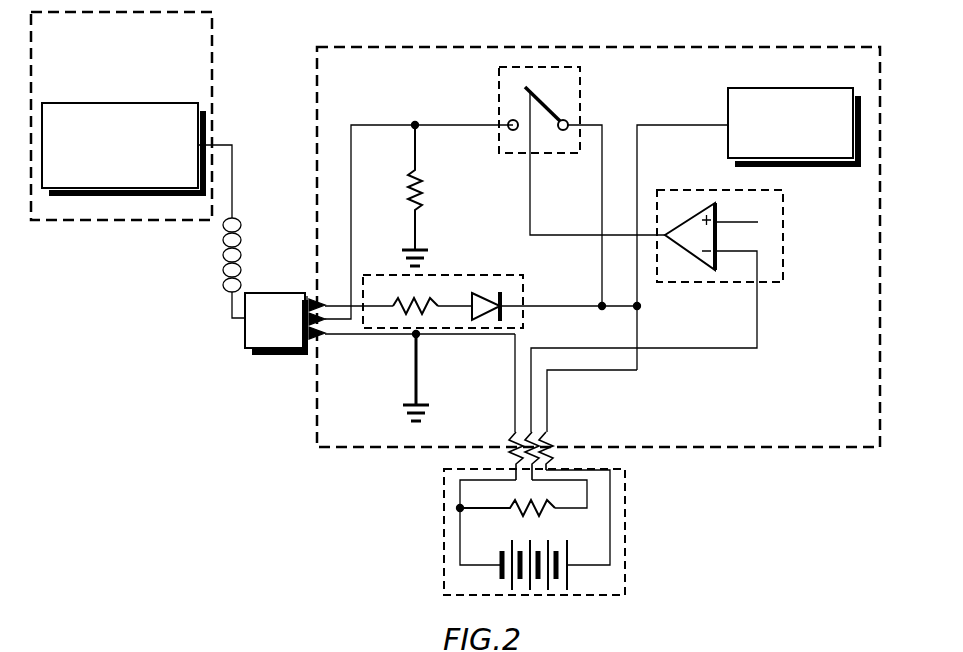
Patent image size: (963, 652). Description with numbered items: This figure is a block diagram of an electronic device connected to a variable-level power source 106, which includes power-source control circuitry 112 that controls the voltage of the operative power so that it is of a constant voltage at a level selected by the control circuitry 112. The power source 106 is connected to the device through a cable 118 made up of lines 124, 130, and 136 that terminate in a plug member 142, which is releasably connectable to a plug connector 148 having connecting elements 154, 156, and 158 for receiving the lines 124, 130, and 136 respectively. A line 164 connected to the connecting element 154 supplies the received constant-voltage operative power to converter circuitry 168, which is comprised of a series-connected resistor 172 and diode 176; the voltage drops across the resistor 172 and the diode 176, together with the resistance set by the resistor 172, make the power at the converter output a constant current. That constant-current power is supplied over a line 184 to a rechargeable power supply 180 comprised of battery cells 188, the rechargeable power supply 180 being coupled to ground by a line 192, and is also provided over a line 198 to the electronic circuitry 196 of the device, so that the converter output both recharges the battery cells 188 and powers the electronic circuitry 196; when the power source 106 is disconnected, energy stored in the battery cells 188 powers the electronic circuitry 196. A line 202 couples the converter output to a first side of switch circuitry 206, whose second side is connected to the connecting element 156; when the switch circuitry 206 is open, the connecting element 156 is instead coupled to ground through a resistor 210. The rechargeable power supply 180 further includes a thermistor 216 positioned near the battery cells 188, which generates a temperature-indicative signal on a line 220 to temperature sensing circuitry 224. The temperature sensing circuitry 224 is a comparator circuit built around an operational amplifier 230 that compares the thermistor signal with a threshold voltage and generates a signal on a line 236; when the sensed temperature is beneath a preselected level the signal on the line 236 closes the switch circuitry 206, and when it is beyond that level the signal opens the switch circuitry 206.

The variable-level power source 106 is at (214, 51).
The power-source control circuitry 112 is at (158, 103).
The cable 118 is at (243, 262).
The line 124 is at (304, 296).
The line 130 is at (292, 350).
The line 136 is at (308, 345).
The plug member 142 is at (247, 333).
The plug connector 148 is at (310, 300).
The connecting element 154 is at (323, 302).
The connecting element 156 is at (343, 336).
The connecting element 158 is at (322, 347).
The line 164 is at (347, 304).
The converter circuitry 168 is at (426, 272).
The resistor 172 is at (405, 300).
The diode 176 is at (488, 276).
The rechargeable power supply 180 is at (444, 535).
The line 184 is at (632, 373).
The battery cells 188 is at (555, 565).
The line 192 is at (516, 346).
The electronic circuitry 196 is at (783, 88).
The line 198 is at (652, 125).
The line 202 is at (600, 155).
The switch circuitry 206 is at (579, 119).
The resistor 210 is at (423, 206).
The thermistor 216 is at (548, 512).
The line 220 is at (668, 350).
The temperature sensing circuitry 224 is at (750, 190).
The operational amplifier 230 is at (682, 245).
The line 236 is at (655, 237).